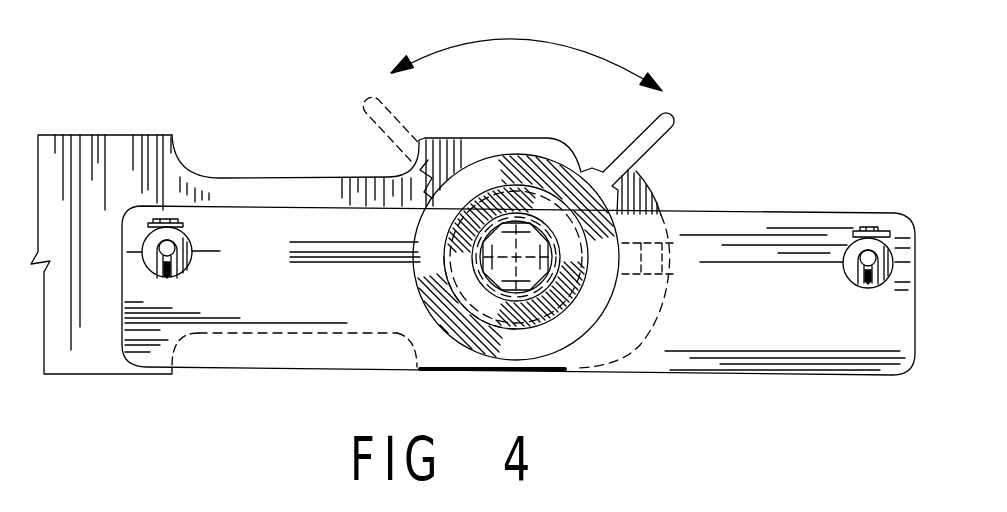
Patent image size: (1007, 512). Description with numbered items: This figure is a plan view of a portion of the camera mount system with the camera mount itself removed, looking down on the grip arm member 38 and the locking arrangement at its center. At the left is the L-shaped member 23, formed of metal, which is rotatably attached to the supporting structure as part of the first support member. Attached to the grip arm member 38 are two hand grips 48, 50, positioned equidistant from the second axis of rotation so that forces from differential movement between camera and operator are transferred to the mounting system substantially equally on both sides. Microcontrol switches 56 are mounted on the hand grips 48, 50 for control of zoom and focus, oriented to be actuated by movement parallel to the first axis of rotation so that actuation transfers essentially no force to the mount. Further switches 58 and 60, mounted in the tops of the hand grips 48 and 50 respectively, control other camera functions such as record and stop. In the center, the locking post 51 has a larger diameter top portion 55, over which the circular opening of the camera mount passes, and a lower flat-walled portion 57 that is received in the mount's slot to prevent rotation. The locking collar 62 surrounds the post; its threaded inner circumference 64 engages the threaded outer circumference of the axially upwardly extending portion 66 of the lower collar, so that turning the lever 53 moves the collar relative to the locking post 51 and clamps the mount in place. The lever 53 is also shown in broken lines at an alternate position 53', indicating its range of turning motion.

The L-shaped member 23 is at (88, 135).
The grip arm member 38 is at (879, 376).
The hand grip 48 is at (193, 253).
The hand grip 50 is at (843, 264).
The locking post 51 is at (488, 315).
The lever 53 is at (582, 215).
The operating lever in alternate position 53' is at (359, 107).
The larger diameter top portion 55 is at (527, 292).
The microcontrol switches 56 is at (183, 226).
The lower flat-walled portion 57 is at (548, 265).
The switch 58 is at (165, 272).
The switch 60 is at (869, 287).
The locking collar 62 is at (590, 328).
The threaded inner circumference 64 is at (562, 325).
The axially upwardly extending portion 66 is at (415, 296).